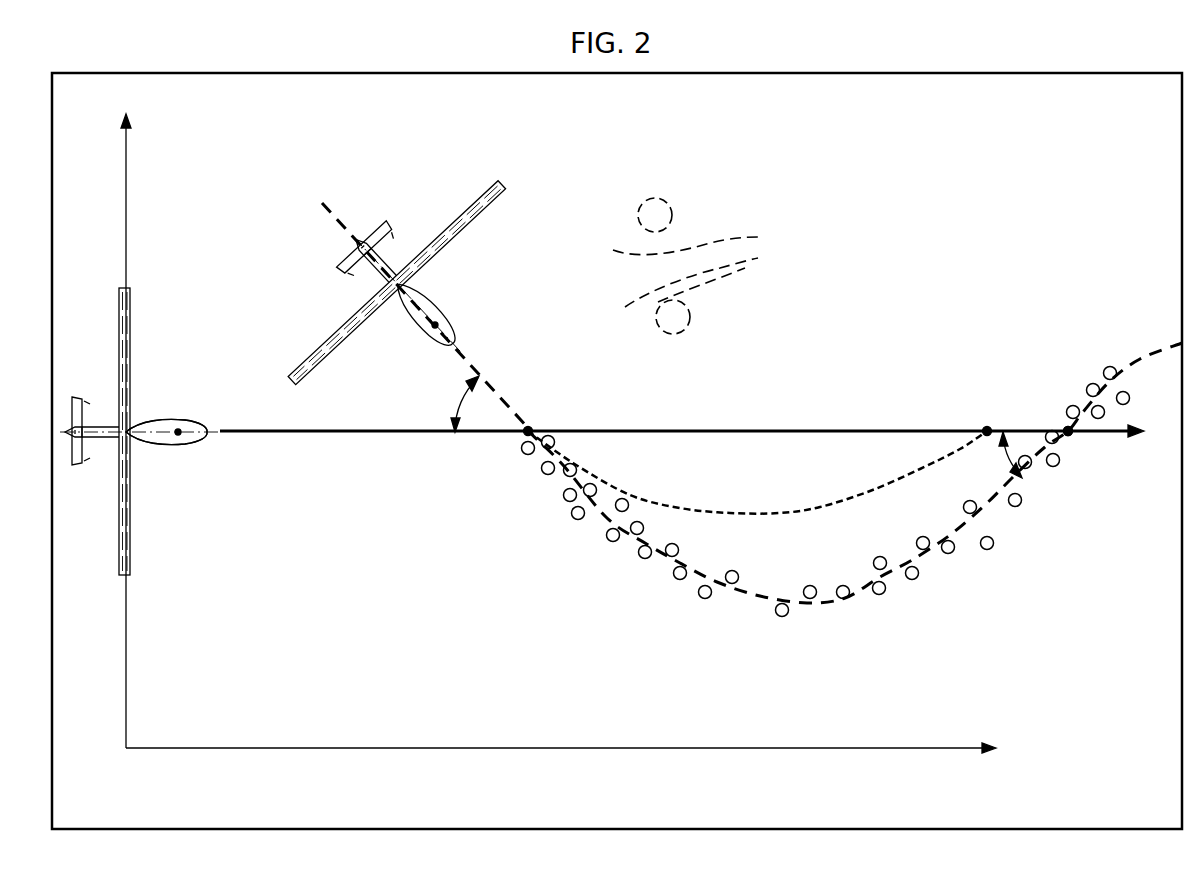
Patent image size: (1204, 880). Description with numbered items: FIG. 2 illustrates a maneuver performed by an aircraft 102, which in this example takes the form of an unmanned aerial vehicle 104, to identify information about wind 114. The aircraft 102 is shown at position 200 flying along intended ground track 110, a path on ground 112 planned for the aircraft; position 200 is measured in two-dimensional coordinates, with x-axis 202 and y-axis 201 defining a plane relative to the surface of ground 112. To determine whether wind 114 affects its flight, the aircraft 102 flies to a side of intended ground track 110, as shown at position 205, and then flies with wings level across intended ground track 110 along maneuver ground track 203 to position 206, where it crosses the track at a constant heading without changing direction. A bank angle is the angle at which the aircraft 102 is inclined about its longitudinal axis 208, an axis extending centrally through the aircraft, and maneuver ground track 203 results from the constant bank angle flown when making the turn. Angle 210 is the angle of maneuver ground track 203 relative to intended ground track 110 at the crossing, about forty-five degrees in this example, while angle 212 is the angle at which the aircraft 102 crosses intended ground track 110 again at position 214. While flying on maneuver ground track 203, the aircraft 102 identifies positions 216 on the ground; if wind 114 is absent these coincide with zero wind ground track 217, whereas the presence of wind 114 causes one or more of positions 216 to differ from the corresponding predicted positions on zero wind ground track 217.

The aircraft 102 is at (132, 505).
The unmanned aerial vehicle 104 is at (194, 445).
The intended ground track 110 is at (800, 428).
The ground 112 is at (595, 131).
The wind 114 is at (713, 218).
The position 200 is at (178, 429).
The y-axis 201 is at (556, 751).
The x-axis 202 is at (125, 236).
The maneuver ground track 203 is at (759, 603).
The position 205 is at (438, 324).
The position 206 is at (531, 427).
The longitudinal axis 208 is at (332, 206).
The angle 210 is at (465, 396).
The angle 212 is at (1005, 455).
The position 214 is at (1071, 437).
The positions 216 is at (705, 553).
The zero wind ground track 217 is at (790, 516).